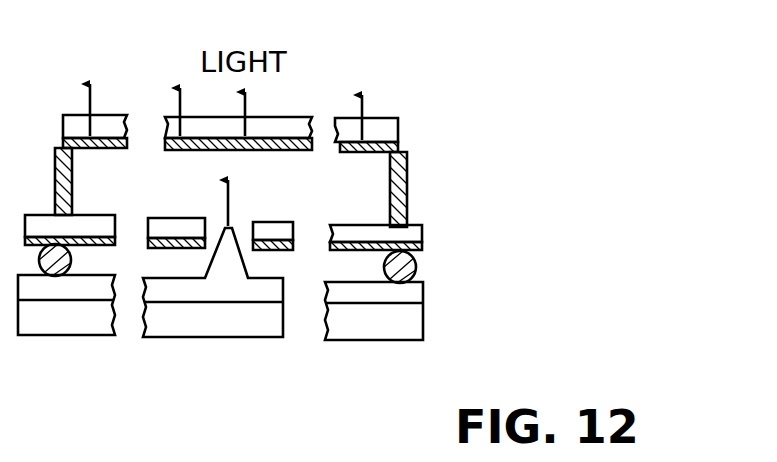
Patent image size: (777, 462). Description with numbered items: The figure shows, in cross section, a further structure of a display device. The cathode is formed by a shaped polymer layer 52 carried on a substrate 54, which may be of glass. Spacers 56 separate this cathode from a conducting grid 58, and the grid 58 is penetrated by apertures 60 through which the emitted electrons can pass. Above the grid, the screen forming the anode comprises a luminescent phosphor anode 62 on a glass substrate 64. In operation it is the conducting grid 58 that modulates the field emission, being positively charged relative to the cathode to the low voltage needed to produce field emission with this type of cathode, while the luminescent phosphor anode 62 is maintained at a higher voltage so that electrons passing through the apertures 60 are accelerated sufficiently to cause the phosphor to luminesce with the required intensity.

The shaped polymer layer 52 is at (424, 295).
The substrate 54 is at (200, 338).
The spacers 56 is at (417, 266).
The conducting grid 58 is at (424, 247).
The apertures 60 is at (310, 222).
The luminescent phosphor anode 62 is at (273, 142).
The glass substrate 64 is at (384, 118).